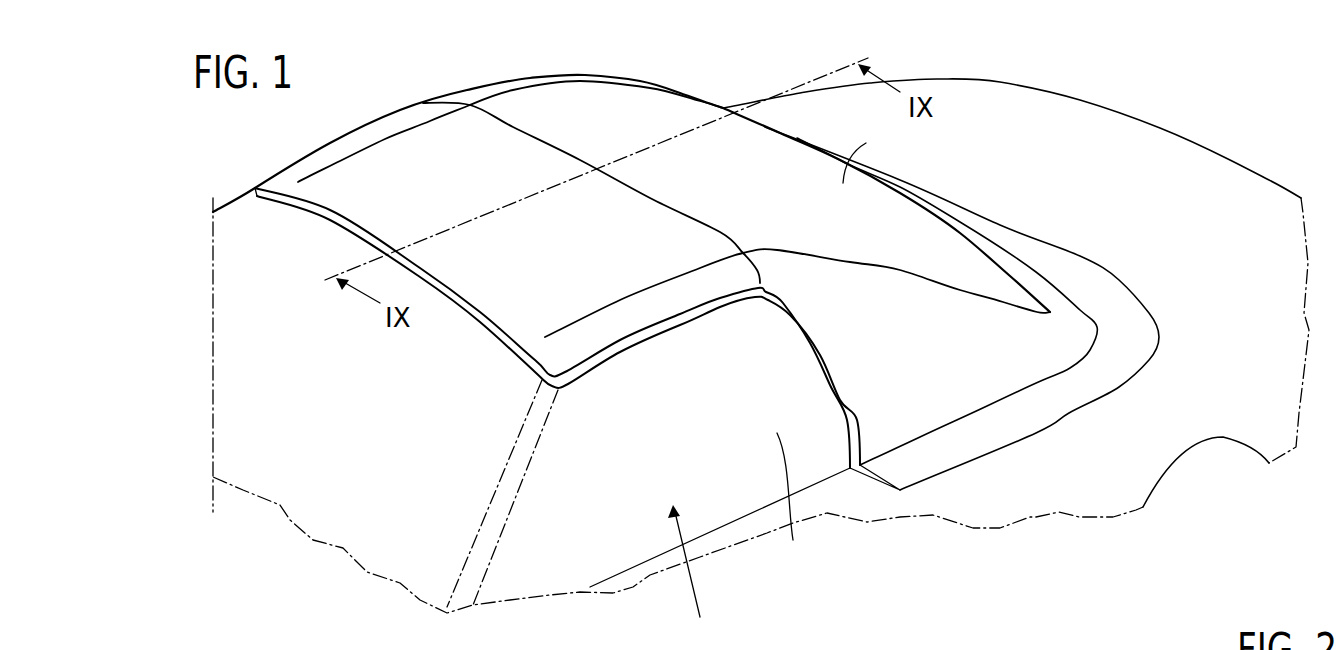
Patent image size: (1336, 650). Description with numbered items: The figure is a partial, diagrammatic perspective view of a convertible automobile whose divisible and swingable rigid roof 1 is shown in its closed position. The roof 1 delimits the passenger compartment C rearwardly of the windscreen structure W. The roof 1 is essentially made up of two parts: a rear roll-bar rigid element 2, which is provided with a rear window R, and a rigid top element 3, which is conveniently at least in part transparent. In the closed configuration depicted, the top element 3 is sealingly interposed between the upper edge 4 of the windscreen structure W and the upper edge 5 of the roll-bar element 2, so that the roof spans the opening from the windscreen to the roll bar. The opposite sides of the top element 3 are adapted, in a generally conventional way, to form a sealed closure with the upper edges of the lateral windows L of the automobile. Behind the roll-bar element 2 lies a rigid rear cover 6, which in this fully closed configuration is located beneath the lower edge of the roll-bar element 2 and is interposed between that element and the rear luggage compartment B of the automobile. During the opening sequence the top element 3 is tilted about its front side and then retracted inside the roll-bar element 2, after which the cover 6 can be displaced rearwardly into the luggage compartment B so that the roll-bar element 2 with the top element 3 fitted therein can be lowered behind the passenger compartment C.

The rigid roof 1 is at (736, 90).
The rear roll-bar rigid element 2 is at (946, 204).
The rigid top element 3 is at (399, 108).
The upper edge of the windscreen structure 4 is at (272, 187).
The upper edge of the roll-bar element 5 is at (690, 217).
The rigid rear cover 6 is at (1115, 290).
The rear luggage compartment B is at (1088, 107).
The windscreen structure W is at (243, 213).
The rear window R is at (866, 153).
The lateral windows L is at (795, 496).
The passenger compartment C is at (695, 577).